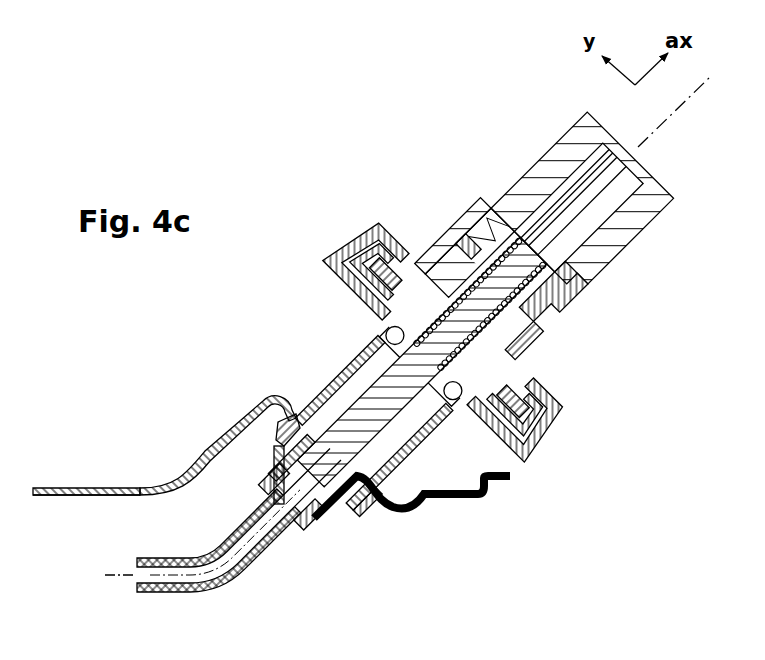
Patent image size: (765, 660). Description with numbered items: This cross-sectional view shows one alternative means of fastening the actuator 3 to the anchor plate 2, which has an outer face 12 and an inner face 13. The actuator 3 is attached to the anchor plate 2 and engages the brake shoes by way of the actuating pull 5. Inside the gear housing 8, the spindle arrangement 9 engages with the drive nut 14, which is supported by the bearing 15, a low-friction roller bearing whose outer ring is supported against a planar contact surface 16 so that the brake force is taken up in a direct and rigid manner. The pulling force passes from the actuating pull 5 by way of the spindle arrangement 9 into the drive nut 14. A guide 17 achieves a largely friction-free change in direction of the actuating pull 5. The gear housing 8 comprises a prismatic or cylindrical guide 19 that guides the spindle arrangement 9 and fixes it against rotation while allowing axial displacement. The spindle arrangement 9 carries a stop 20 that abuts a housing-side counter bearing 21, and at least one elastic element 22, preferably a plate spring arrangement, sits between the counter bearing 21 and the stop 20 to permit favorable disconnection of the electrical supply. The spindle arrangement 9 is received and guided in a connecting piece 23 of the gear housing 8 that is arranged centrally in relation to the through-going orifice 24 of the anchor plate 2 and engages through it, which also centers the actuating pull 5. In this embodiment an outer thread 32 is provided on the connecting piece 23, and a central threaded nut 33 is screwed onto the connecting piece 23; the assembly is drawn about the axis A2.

The anchor plate 2 is at (193, 467).
The actuator 3 is at (668, 357).
The actuating pull 5 is at (172, 572).
The gear housing 8 is at (537, 427).
The spindle arrangement 9 is at (507, 268).
The outer face 12 is at (60, 488).
The inner face 13 is at (53, 503).
The drive nut 14 is at (503, 357).
The bearing 15 is at (382, 330).
The contact surface 16 is at (290, 405).
The guide 17 is at (195, 577).
The guide 19 is at (633, 190).
The stop 20 is at (543, 280).
The counter bearing 21 is at (457, 272).
The elastic element 22 is at (540, 317).
The connecting piece 23 is at (430, 423).
The through-going orifice 24 is at (330, 420).
The outer thread 32 is at (270, 432).
The threaded nut 33 is at (360, 513).
The axis A2 is at (704, 84).